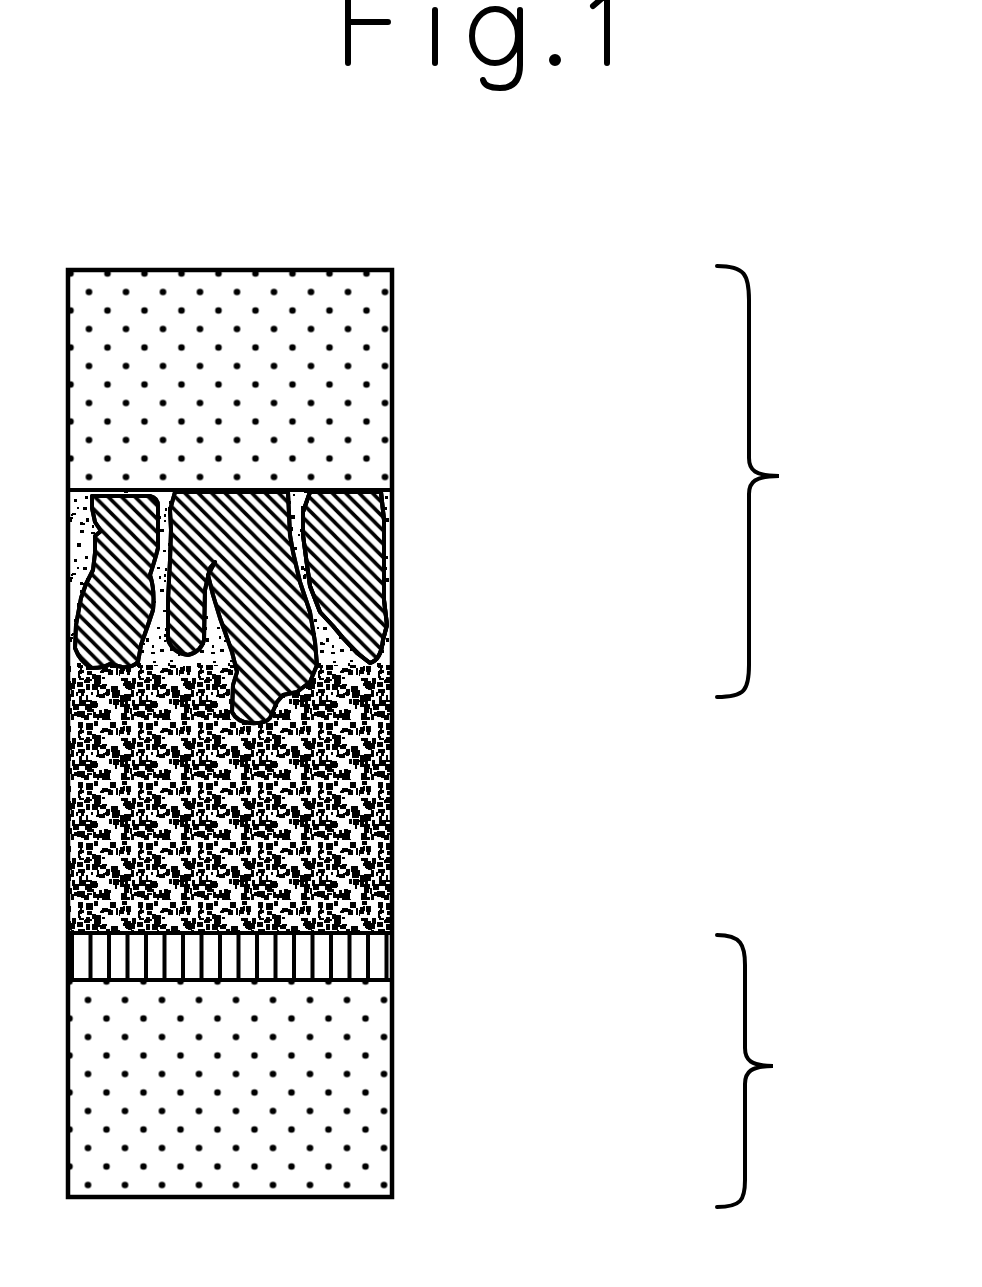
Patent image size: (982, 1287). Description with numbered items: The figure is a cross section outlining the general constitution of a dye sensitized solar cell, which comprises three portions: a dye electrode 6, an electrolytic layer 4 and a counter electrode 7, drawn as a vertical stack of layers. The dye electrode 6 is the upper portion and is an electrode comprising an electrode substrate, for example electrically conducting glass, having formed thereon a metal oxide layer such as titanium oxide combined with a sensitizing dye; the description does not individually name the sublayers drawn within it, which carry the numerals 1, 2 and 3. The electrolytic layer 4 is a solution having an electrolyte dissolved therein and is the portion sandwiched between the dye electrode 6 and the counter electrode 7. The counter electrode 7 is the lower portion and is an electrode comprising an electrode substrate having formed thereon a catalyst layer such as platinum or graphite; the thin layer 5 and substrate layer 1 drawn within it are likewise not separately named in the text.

The glass fiber reinforced resin layer 1 is at (342, 366).
The resin-rich region 2 is at (348, 578).
The boundary of resin region 3 is at (377, 646).
The electrolytic layer 4 is at (323, 783).
The adhesive layer 5 is at (325, 956).
The dye electrode 6 is at (780, 481).
The counter electrode 7 is at (777, 1071).